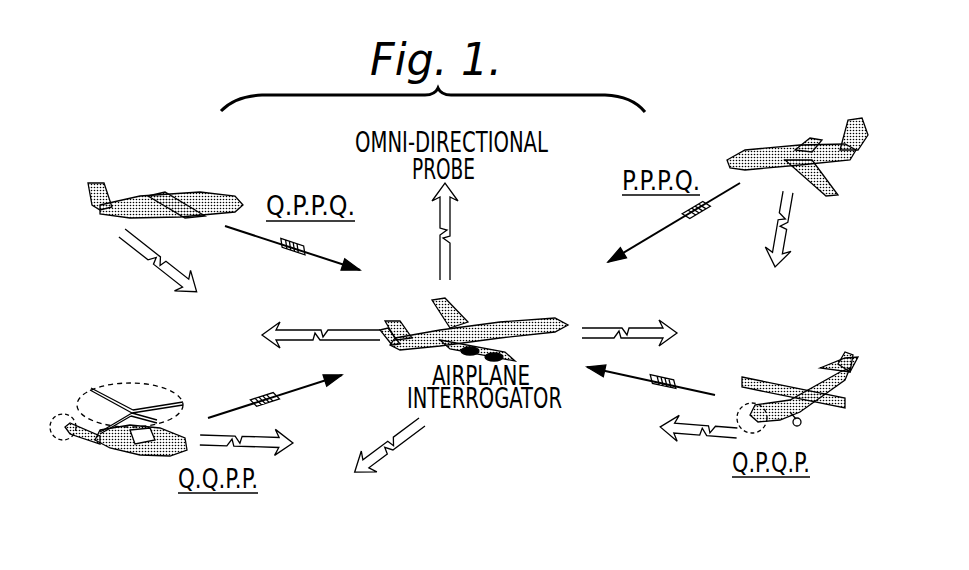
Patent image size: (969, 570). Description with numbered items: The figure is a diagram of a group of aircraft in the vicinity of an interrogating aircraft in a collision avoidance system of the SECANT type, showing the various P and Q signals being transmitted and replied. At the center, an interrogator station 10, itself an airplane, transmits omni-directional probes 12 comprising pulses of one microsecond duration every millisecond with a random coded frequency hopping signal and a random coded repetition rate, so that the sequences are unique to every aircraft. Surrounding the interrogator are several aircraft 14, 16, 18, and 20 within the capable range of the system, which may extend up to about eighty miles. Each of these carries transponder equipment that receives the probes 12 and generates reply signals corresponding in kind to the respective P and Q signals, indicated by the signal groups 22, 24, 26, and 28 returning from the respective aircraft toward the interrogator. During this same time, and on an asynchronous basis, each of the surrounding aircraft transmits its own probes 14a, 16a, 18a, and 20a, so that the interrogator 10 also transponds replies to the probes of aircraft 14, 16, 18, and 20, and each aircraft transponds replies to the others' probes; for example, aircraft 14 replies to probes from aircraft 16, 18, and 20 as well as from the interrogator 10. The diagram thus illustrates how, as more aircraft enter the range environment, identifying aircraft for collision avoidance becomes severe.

The interrogator station 10 is at (505, 325).
The probes 12 is at (456, 234).
The aircraft 14 is at (770, 152).
The probes 14a is at (795, 233).
The aircraft 16 is at (800, 380).
The probes 16a is at (697, 440).
The aircraft 18 is at (195, 200).
The probes 18a is at (155, 263).
The aircraft 20 is at (120, 448).
The probes 20a is at (262, 452).
The signal group 22 is at (677, 227).
The signal group 24 is at (690, 382).
The signal group 26 is at (262, 244).
The signal group 28 is at (290, 395).